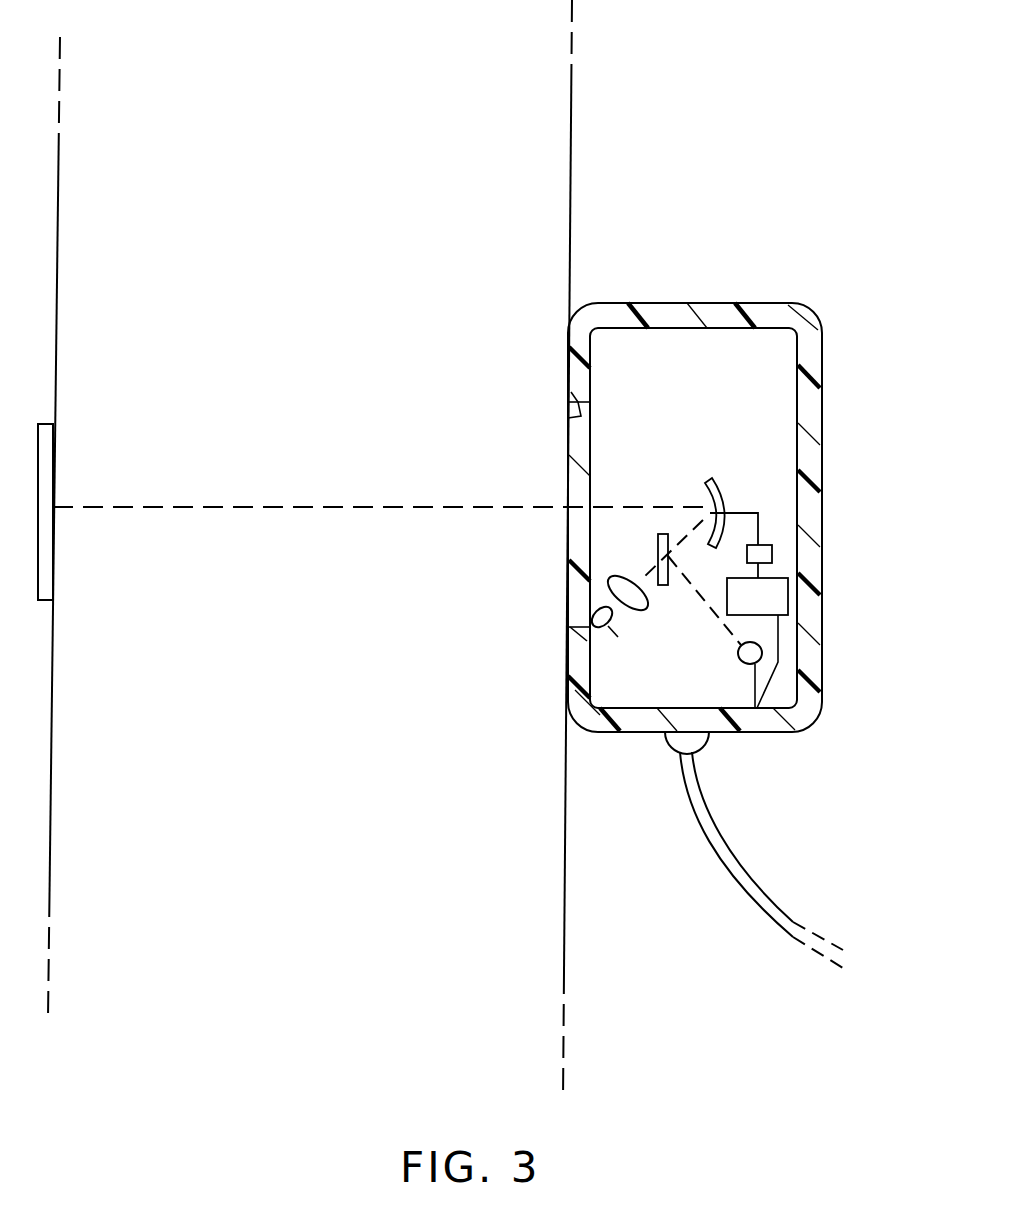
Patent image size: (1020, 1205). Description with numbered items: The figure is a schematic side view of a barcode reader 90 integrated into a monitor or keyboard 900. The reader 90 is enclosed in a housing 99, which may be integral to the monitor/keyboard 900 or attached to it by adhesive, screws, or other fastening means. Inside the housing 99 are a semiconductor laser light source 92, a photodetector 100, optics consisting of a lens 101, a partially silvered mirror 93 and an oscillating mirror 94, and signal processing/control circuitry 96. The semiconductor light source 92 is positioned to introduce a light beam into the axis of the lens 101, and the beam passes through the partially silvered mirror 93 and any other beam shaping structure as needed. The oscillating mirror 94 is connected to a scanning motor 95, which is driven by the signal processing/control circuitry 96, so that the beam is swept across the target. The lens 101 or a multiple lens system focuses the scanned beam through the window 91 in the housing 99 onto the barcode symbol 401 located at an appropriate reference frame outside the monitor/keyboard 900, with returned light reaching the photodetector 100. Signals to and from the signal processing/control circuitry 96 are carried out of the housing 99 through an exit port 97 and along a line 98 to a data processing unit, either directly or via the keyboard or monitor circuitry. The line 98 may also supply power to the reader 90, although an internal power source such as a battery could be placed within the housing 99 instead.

The reader 90 is at (745, 466).
The window 91 is at (568, 418).
The semiconductor laser light source 92 is at (618, 637).
The partially silvered mirror 93 is at (657, 544).
The oscillating mirror 94 is at (711, 478).
The scanning motor 95 is at (773, 553).
The signal processing/control circuitry 96 is at (788, 596).
The exit port 97 is at (706, 742).
The line 98 is at (755, 886).
The housing 99 is at (823, 407).
The photodetector 100 is at (762, 652).
The lens 101 is at (612, 590).
The barcode symbol 401 is at (55, 457).
The monitor or keyboard 900 is at (571, 143).